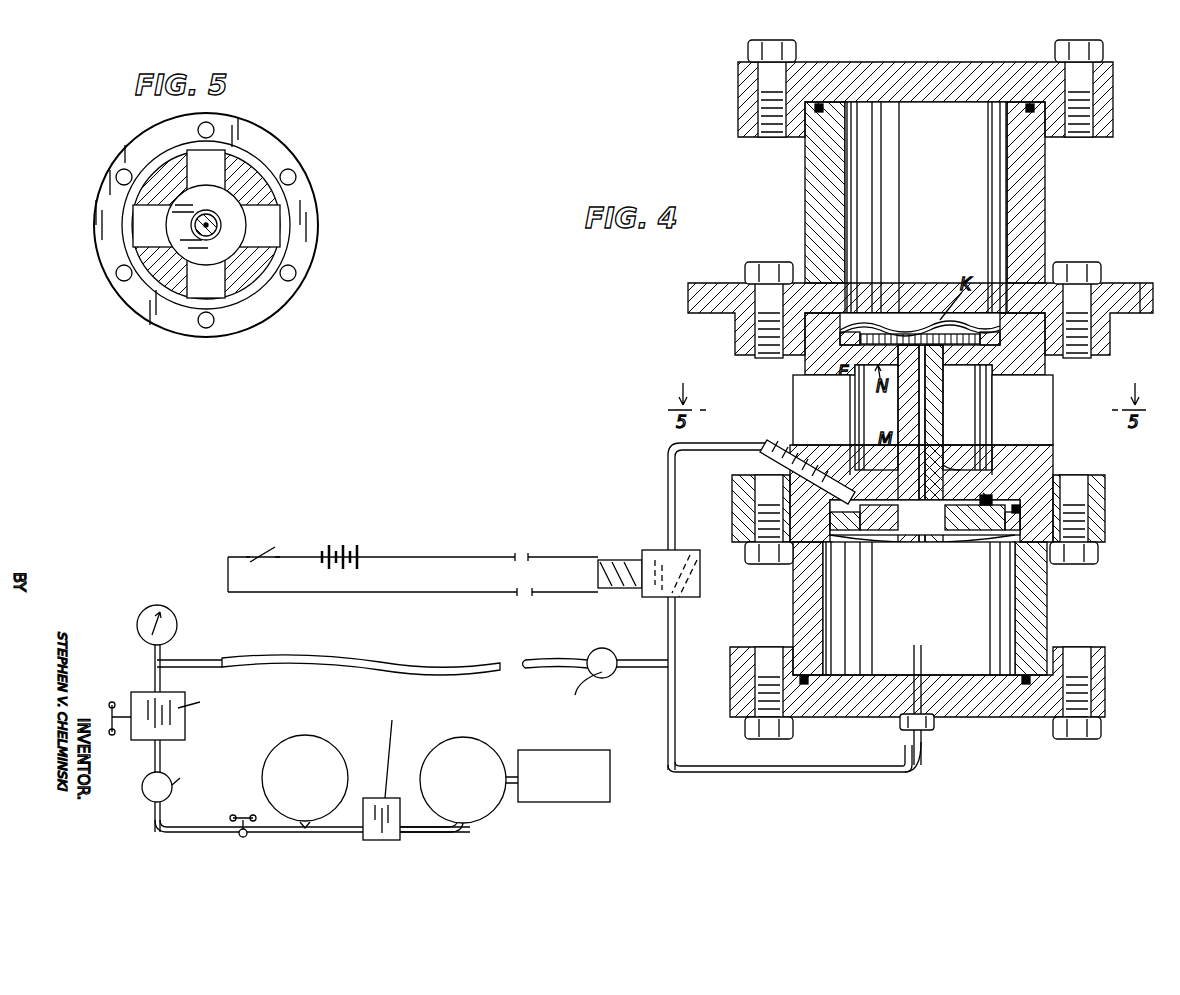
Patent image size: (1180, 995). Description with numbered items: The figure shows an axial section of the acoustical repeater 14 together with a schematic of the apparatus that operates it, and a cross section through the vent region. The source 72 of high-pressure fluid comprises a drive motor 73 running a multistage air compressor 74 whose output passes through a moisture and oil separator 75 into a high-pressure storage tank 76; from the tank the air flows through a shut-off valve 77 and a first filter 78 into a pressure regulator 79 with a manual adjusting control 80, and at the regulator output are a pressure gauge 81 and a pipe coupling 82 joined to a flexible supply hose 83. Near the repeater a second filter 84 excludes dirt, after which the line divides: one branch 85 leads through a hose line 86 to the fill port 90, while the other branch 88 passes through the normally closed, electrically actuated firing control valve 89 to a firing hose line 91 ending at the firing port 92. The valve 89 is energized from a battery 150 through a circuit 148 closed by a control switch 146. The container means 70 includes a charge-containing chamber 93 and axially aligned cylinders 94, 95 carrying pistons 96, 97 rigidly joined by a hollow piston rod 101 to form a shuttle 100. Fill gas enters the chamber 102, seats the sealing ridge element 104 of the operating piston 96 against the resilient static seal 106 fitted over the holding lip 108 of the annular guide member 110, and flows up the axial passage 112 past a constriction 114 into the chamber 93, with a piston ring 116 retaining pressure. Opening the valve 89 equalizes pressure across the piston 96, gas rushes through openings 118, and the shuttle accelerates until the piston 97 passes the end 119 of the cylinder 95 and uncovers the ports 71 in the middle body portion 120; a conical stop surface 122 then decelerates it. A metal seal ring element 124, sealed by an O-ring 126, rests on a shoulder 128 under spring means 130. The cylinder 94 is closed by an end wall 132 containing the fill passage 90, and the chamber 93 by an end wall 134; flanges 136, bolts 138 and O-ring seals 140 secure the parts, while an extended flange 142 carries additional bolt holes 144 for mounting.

In FIG. 4, the acoustical repeater 14 is at (1090, 216).
In FIG. 4, the container means 70 is at (1047, 210).
In FIG. 5, the ports 71 is at (200, 158).
In FIG. 4, the ports 71 is at (793, 400).
In FIG. 4, the source of high-pressure fluid 72 is at (636, 806).
In FIG. 4, the drive motor 73 is at (570, 750).
In FIG. 4, the air compressor 74 is at (485, 748).
In FIG. 4, the moisture and oil separator 75 is at (372, 840).
In FIG. 4, the high-pressure storage tank 76 is at (318, 804).
In FIG. 4, the shut-off valve 77 is at (240, 840).
In FIG. 4, the first filter 78 is at (143, 790).
In FIG. 4, the pressure regulator 79 is at (140, 740).
In FIG. 4, the manual adjusting control 80 is at (110, 704).
In FIG. 4, the pressure gauge 81 is at (168, 610).
In FIG. 4, the pipe coupling 82 is at (195, 660).
In FIG. 4, the flexible high-pressure fluid supply hose 83 is at (290, 660).
In FIG. 4, the second filter 84 is at (612, 653).
In FIG. 4, the branch 85 is at (675, 690).
In FIG. 4, the hose line 86 is at (925, 742).
In FIG. 4, the other branch 88 is at (675, 622).
In FIG. 4, the firing control valve 89 is at (706, 529).
In FIG. 4, the fill port 90 is at (918, 660).
In FIG. 4, the firing hose line 91 is at (755, 428).
In FIG. 4, the firing port 92 is at (898, 462).
In FIG. 4, the charge-containing chamber 93 is at (950, 196).
In FIG. 4, the cylinder 94 is at (1015, 622).
In FIG. 4, the cylinder 95 is at (855, 385).
In FIG. 4, the piston 96 is at (952, 552).
In FIG. 4, the piston 97 is at (945, 365).
In FIG. 4, the shuttle 100 is at (980, 432).
In FIG. 5, the hollow piston rod 101 is at (205, 210).
In FIG. 4, the hollow piston rod 101 is at (948, 410).
In FIG. 4, the chamber 102 is at (948, 619).
In FIG. 4, the sealing ridge element 104 is at (793, 565).
In FIG. 4, the resilient static seal 106 is at (1020, 512).
In FIG. 4, the holding lip 108 is at (992, 500).
In FIG. 4, the annular guide member 110 is at (985, 530).
In FIG. 5, the axial passage 112 is at (218, 230).
In FIG. 4, the axial passage 112 is at (915, 548).
In FIG. 4, the constriction 114 is at (921, 338).
In FIG. 4, the piston ring 116 is at (935, 530).
In FIG. 4, the openings 118 is at (845, 530).
In FIG. 4, the end of cylinder 119 is at (820, 388).
In FIG. 5, the middle body portion 120 is at (258, 172).
In FIG. 4, the middle body portion 120 is at (1053, 455).
In FIG. 4, the conical stop surface 122 is at (960, 464).
In FIG. 4, the seal ring element 124 is at (905, 290).
In FIG. 4, the resilient sealing element 126 is at (845, 345).
In FIG. 4, the shoulder 128 is at (920, 329).
In FIG. 4, the spring means 130 is at (895, 322).
In FIG. 4, the end wall 132 is at (870, 718).
In FIG. 4, the end wall 134 is at (955, 62).
In FIG. 5, the flanges 136 is at (320, 185).
In FIG. 4, the flanges 136 is at (1115, 122).
In FIG. 5, the bolts 138 is at (118, 280).
In FIG. 4, the bolts 138 is at (745, 50).
In FIG. 4, the O-ring seals 140 is at (818, 112).
In FIG. 4, the flange 142 is at (1150, 300).
In FIG. 4, the bolt holes 144 is at (712, 290).
In FIG. 4, the control switch 146 is at (272, 548).
In FIG. 4, the circuit 148 is at (455, 592).
In FIG. 4, the source of electrical energy 150 is at (340, 545).